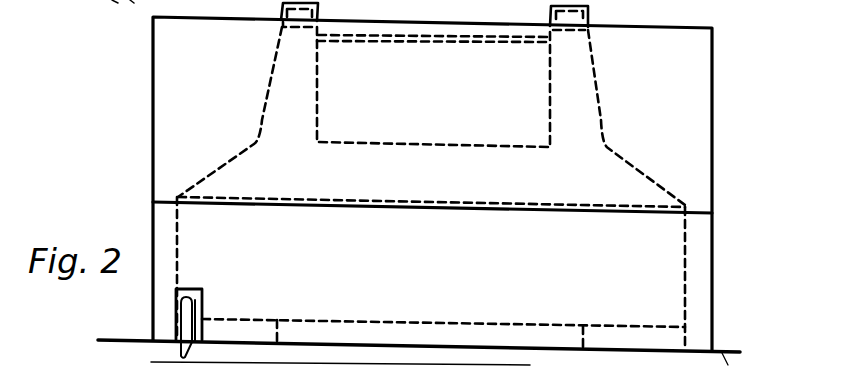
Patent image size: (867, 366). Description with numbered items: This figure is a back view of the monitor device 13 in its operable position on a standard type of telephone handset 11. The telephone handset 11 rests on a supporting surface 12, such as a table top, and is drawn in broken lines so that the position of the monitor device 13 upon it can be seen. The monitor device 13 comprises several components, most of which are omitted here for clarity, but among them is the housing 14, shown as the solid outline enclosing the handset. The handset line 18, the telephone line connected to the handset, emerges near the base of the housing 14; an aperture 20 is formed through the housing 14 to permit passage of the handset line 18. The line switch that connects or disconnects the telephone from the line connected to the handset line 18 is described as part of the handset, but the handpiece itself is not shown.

The telephone handset 11 is at (424, 187).
The supporting surface 12 is at (740, 0).
The monitor device 13 is at (423, 266).
The housing 14 is at (692, 125).
The handset line 18 is at (186, 348).
The aperture 20 is at (203, 295).